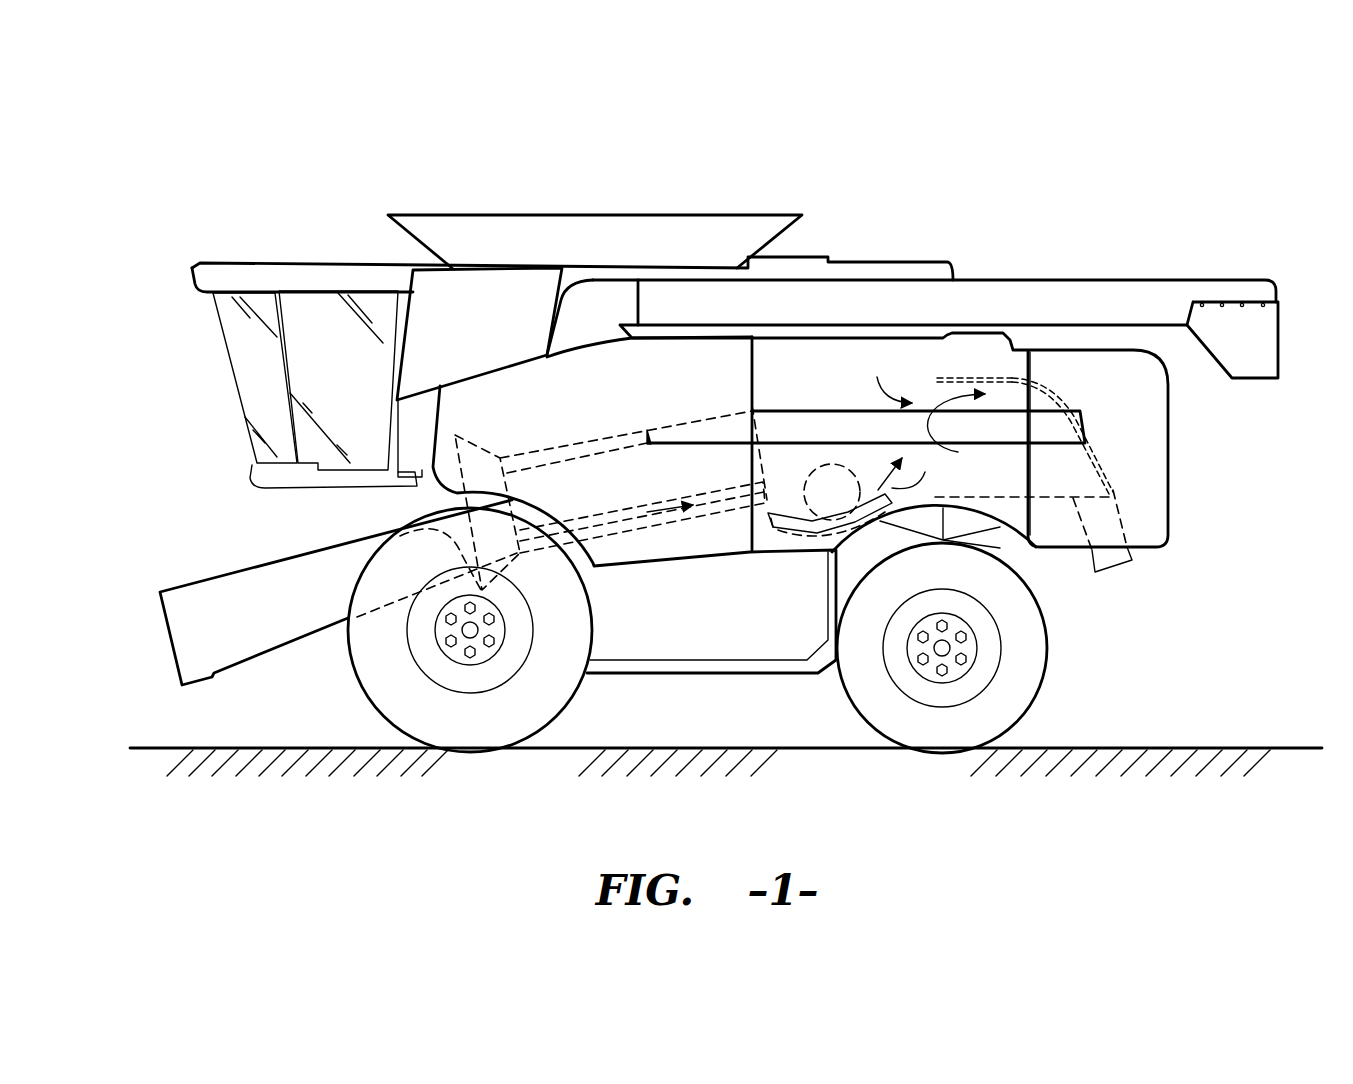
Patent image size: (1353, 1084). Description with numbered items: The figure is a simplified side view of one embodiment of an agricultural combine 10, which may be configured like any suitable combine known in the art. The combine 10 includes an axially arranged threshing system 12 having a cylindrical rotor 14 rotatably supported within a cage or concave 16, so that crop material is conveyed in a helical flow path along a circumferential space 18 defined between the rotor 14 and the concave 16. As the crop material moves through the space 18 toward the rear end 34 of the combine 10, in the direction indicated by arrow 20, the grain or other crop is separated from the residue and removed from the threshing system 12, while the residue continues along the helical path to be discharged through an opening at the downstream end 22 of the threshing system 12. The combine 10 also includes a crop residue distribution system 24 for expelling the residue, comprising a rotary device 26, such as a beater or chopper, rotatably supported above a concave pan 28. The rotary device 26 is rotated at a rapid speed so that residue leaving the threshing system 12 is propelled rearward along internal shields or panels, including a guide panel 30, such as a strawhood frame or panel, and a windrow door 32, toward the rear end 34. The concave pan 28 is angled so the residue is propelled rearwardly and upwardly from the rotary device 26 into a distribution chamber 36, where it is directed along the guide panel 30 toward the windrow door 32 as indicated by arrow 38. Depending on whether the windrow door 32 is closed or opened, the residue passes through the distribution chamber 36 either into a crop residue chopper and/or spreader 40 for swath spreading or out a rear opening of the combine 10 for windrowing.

The agricultural combine 10 is at (1082, 249).
The threshing system 12 is at (566, 437).
The cylindrical rotor 14 is at (618, 448).
The concave 16 is at (643, 528).
The circumferential space 18 is at (602, 524).
The arrow 20 is at (670, 512).
The downstream end 22 is at (760, 458).
The crop residue distribution system 24 is at (886, 373).
The rotary device 26 is at (800, 532).
The concave pan 28 is at (772, 528).
The guide panel 30 is at (977, 381).
The windrow door 32 is at (1058, 388).
The rear end 34 is at (1172, 457).
The distribution chamber 36 is at (975, 478).
The arrow 38 is at (931, 442).
The spreader 40 is at (1113, 570).